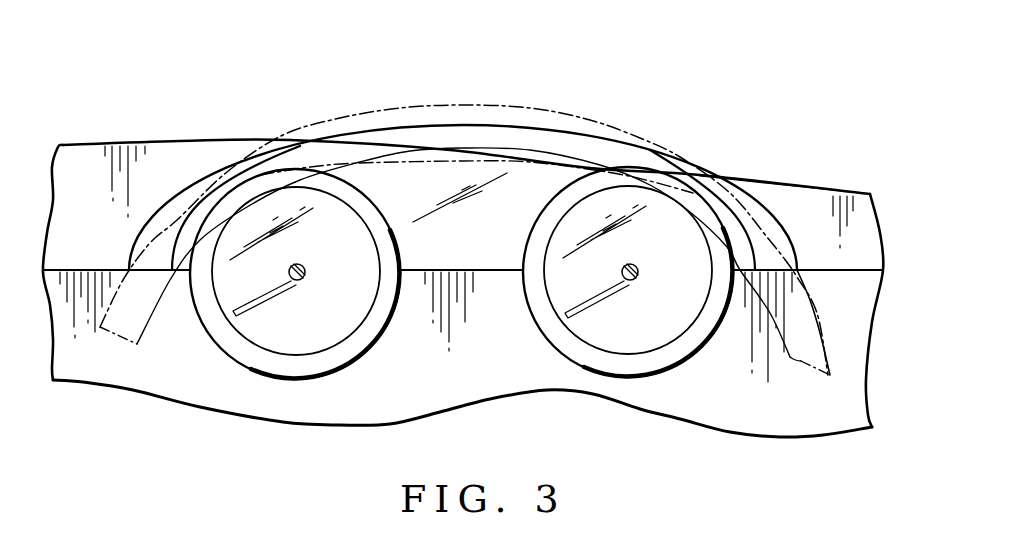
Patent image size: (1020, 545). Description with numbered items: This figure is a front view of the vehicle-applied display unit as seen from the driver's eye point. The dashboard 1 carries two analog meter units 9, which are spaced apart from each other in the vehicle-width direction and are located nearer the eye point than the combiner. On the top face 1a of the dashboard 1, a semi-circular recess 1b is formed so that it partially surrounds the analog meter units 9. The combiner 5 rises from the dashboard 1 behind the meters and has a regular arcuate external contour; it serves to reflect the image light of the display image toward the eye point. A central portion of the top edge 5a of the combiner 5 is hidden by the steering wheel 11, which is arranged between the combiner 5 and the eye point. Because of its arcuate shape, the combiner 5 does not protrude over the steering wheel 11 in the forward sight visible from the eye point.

The dashboard 1 is at (858, 192).
The top face 1a is at (737, 185).
The semi-circular recess 1b is at (777, 223).
The combiner 5 is at (425, 127).
The top edge 5a is at (365, 133).
The analog meter unit 9 is at (280, 379).
The steering wheel 11 is at (527, 107).